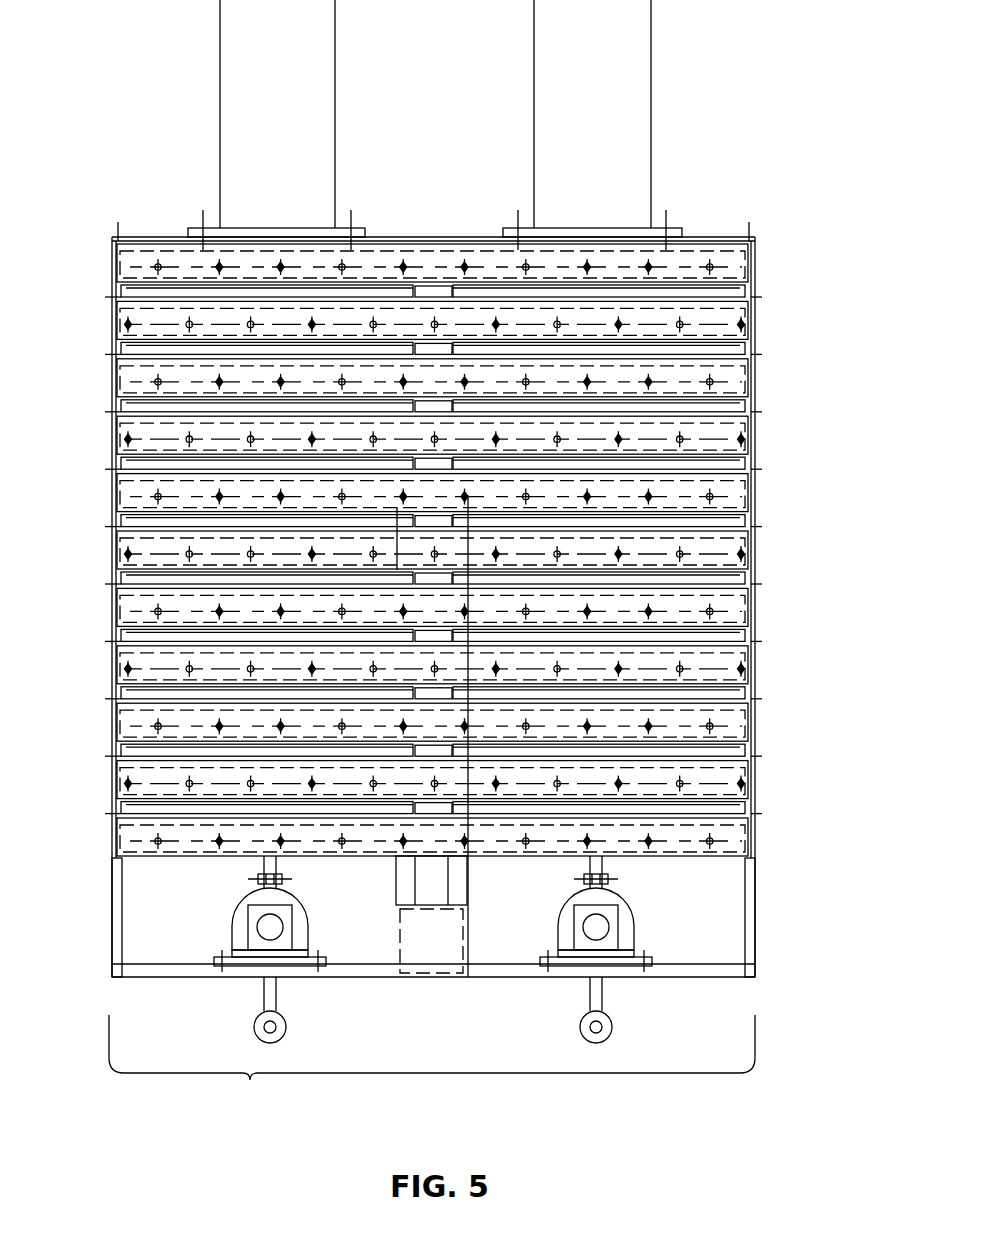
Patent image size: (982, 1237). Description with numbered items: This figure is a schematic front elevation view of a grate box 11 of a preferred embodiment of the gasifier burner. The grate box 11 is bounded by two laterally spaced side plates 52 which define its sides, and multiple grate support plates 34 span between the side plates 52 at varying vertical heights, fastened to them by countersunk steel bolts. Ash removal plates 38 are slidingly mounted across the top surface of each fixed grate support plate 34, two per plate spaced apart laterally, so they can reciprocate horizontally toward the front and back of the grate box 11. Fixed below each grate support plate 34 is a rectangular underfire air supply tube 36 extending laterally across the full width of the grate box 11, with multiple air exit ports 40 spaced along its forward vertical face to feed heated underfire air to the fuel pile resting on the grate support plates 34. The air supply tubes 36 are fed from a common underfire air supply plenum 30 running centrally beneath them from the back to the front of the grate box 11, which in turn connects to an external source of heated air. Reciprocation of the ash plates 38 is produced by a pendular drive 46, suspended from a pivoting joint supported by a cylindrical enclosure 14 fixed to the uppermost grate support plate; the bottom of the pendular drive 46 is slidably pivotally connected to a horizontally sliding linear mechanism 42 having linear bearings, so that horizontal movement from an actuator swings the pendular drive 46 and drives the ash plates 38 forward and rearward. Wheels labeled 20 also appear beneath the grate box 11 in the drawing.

The grate box 11 is at (432, 1069).
The cylindrical enclosure 14 is at (335, 35).
The wheels 20 is at (286, 1027).
The underfire air supply plenum 30 is at (443, 965).
The grate support plate 34 is at (727, 593).
The underfire air supply tube 36 is at (740, 263).
The ash removal plate 38 is at (750, 530).
The air exit port 40 is at (710, 382).
The horizontally sliding linear mechanism 42 is at (634, 935).
The pendular drive 46 is at (282, 874).
The side plate 52 is at (112, 905).